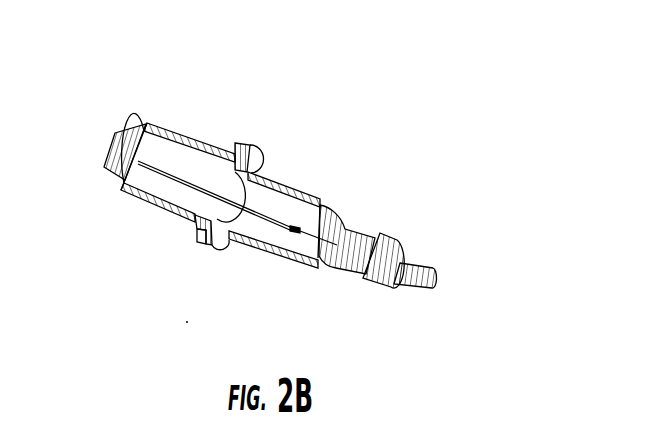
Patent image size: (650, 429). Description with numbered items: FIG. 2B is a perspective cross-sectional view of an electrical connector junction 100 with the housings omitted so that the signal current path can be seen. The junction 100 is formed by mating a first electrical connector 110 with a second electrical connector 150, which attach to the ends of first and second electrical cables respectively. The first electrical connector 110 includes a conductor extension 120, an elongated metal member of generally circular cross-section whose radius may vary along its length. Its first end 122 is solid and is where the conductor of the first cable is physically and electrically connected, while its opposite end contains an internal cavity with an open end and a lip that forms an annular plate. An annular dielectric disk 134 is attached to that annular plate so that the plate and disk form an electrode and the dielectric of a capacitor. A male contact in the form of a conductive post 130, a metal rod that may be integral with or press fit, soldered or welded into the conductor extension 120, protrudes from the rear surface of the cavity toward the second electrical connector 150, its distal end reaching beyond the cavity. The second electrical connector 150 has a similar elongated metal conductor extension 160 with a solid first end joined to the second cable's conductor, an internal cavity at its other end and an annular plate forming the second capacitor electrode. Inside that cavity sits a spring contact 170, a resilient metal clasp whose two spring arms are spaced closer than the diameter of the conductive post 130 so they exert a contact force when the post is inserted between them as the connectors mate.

The electrical connector junction 100 is at (298, 193).
The first electrical connector 110 is at (157, 154).
The conductor extension 120 is at (157, 202).
The first end 122 is at (116, 132).
The conductive post 130 is at (267, 217).
The annular dielectric disk 134 is at (242, 142).
The second electrical connector 150 is at (307, 151).
The conductor extension 160 is at (299, 191).
The spring contact 170 is at (300, 231).